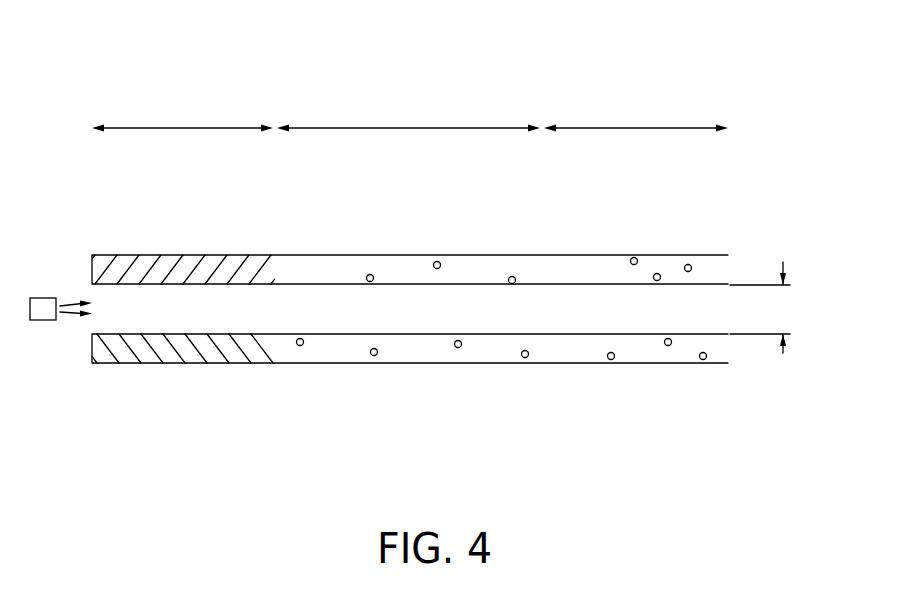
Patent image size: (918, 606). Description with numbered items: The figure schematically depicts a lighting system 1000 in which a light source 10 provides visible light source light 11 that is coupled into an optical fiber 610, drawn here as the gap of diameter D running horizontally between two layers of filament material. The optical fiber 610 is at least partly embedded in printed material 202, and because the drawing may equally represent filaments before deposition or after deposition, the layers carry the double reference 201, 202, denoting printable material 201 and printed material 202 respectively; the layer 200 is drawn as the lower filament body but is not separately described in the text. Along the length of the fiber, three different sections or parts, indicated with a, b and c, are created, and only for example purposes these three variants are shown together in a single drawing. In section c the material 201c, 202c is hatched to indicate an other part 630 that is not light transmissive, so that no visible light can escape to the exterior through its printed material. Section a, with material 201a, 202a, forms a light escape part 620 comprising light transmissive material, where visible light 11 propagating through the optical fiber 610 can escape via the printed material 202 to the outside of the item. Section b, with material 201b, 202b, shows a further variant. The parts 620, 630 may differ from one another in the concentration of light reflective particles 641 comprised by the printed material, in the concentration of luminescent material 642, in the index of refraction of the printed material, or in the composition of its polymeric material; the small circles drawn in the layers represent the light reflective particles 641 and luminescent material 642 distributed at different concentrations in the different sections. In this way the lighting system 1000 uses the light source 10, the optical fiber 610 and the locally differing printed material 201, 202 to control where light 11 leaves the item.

The lighting system 1000 is at (132, 70).
The light source 10 is at (35, 320).
The visible light source light 11 is at (73, 318).
The light guide plate 200 is at (176, 356).
The 3D printable material 201 is at (410, 308).
The 3D printed material 202 is at (585, 264).
The 3D printable material of part a 201a is at (408, 353).
The 3D printed material of part a 202a is at (408, 270).
The 3D printable material of part b 201b is at (620, 353).
The 3D printed material of part b 202b is at (555, 272).
The 3D printable material of part c 201c is at (180, 352).
The 3D printed material of part c 202c is at (125, 270).
The optical fiber 610 is at (700, 308).
The light escape part 620 is at (501, 220).
The other part 630 is at (194, 218).
The light reflective particles 641 is at (374, 356).
The luminescent material 642 is at (437, 262).
The section a is at (407, 106).
The section b is at (644, 103).
The section c is at (186, 103).
The diameter D is at (784, 308).